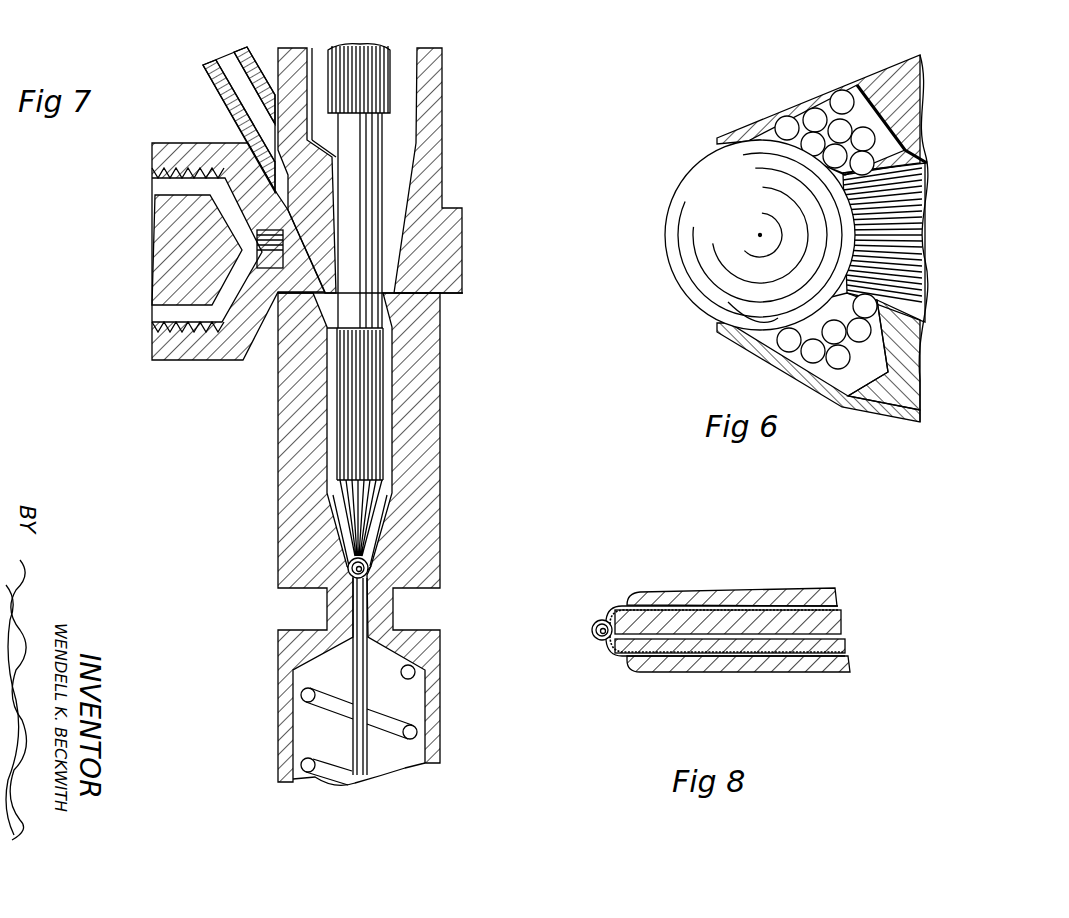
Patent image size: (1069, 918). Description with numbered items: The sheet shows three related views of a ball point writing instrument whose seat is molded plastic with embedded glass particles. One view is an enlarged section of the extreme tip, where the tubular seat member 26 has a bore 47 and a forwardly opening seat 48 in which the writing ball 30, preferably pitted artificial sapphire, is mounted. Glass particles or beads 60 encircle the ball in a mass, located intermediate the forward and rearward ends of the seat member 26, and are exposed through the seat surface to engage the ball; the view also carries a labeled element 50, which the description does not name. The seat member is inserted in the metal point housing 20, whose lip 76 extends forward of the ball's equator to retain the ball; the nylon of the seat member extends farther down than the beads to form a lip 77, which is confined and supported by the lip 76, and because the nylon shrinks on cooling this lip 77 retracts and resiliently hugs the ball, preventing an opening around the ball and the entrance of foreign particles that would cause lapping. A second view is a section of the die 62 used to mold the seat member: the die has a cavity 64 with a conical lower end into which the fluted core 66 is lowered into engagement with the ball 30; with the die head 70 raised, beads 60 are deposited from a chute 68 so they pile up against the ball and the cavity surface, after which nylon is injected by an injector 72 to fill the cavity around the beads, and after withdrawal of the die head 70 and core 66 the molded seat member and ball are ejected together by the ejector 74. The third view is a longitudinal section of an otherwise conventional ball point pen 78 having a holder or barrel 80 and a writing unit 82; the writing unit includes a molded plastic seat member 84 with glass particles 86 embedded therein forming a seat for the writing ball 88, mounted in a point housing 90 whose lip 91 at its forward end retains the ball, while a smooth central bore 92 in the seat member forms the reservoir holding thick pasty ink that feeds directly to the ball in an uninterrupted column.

In FIG. 6, the point housing 20 is at (885, 422).
In FIG. 6, the seat member 26 is at (905, 360).
In FIG. 7, the writing ball 30 is at (378, 573).
In FIG. 6, the writing ball 30 is at (700, 200).
In FIG. 6, the bore 47 is at (908, 258).
In FIG. 6, the seat 48 is at (775, 316).
In FIG. 6, the optical fibers 50 is at (912, 224).
In FIG. 7, the glass particles or beads 60 is at (340, 560).
In FIG. 6, the glass particles or beads 60 is at (841, 100).
In FIG. 7, the die 62 is at (278, 491).
In FIG. 7, the cavity 64 is at (388, 443).
In FIG. 7, the fluted core 66 is at (372, 143).
In FIG. 7, the chute 68 is at (216, 88).
In FIG. 7, the die head 70 is at (437, 75).
In FIG. 7, the injector 72 is at (192, 362).
In FIG. 7, the ejector 74 is at (360, 670).
In FIG. 6, the lip 76 is at (788, 342).
In FIG. 6, the lip 77 is at (772, 135).
In FIG. 8, the ball point pen 78 is at (697, 631).
In FIG. 8, the holder or barrel 80 is at (688, 592).
In FIG. 8, the writing unit 82 is at (683, 660).
In FIG. 8, the molded plastic seat member 84 is at (632, 605).
In FIG. 8, the glass particles 86 is at (606, 648).
In FIG. 8, the writing ball 88 is at (592, 634).
In FIG. 8, the point housing 90 is at (725, 635).
In FIG. 8, the lip 91 is at (606, 615).
In FIG. 8, the central bore 92 is at (778, 658).